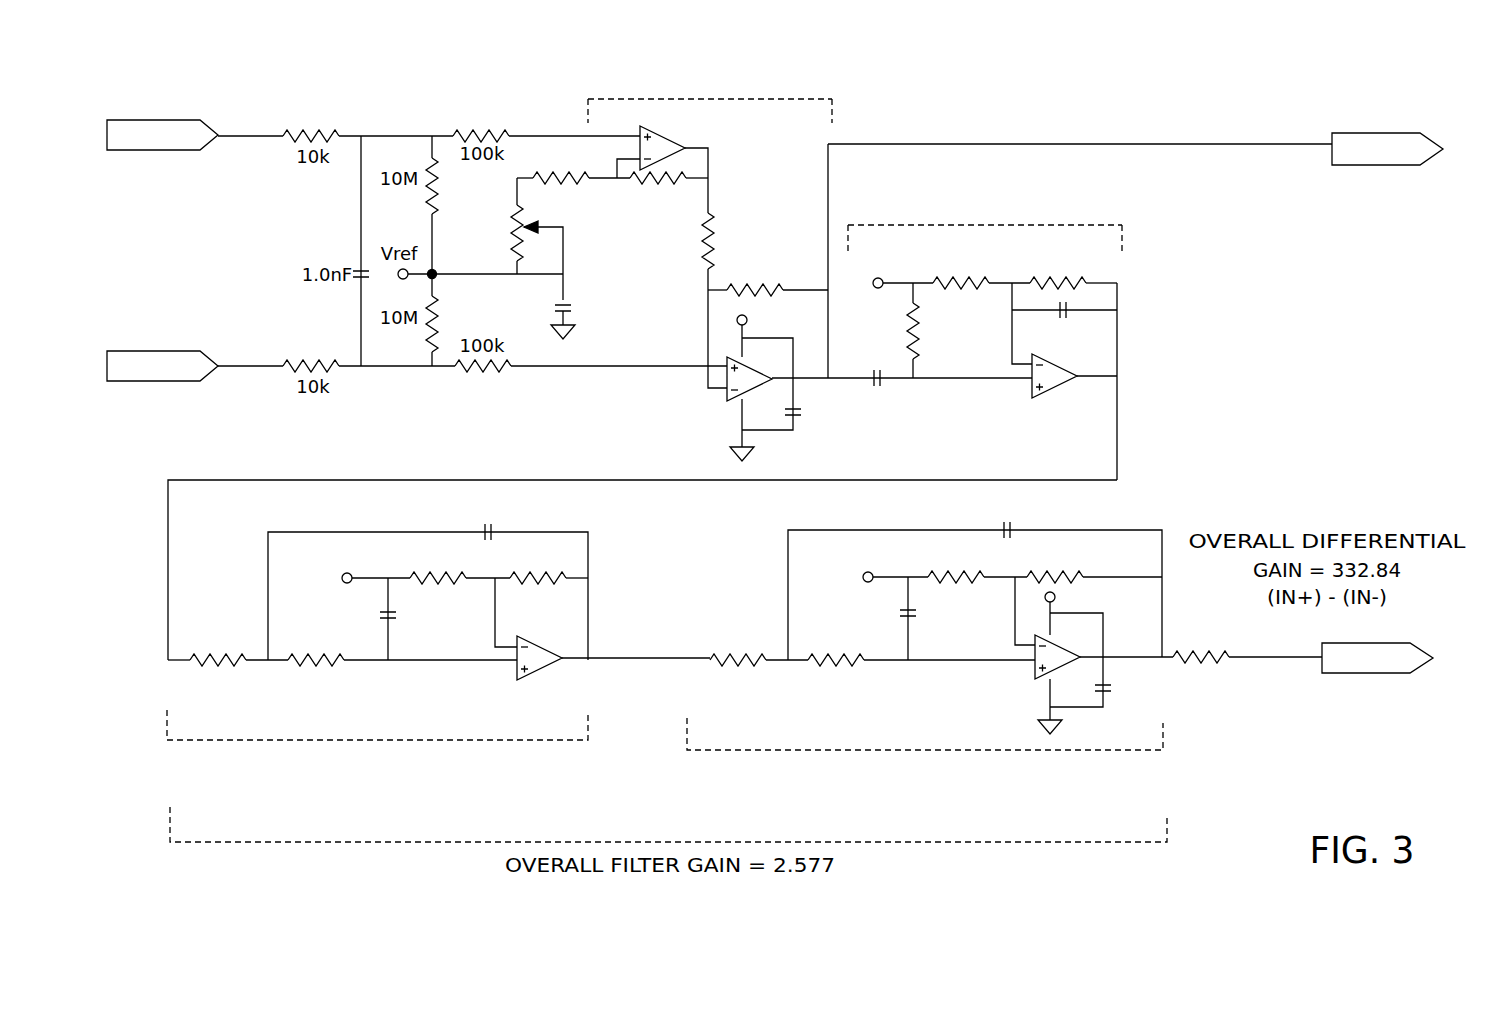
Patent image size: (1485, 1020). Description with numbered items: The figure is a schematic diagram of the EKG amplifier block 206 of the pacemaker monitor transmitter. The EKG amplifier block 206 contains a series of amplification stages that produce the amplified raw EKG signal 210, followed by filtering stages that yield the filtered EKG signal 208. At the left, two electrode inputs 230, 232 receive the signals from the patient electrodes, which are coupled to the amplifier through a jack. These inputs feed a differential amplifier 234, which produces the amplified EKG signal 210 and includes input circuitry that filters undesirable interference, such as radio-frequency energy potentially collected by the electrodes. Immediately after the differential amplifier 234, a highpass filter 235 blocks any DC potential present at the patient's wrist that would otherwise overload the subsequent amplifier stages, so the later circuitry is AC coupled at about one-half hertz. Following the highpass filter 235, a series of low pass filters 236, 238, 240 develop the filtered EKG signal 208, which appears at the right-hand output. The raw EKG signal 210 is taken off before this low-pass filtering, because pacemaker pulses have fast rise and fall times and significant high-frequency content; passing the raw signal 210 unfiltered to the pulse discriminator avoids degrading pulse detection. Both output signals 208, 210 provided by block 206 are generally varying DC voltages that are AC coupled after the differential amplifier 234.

The EKG amplifier block 206 is at (1216, 126).
The filtered EKG signal 208 is at (1255, 657).
The amplified raw EKG signal 210 is at (1185, 145).
The electrode input 230 is at (236, 138).
The electrode input 232 is at (236, 369).
The differential amplifier 234 is at (832, 113).
The highpass filter 235 is at (908, 390).
The low pass filter 236 is at (1122, 242).
The low pass filter 238 is at (588, 712).
The low pass filter 240 is at (1163, 735).